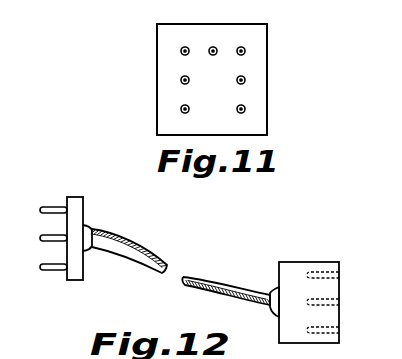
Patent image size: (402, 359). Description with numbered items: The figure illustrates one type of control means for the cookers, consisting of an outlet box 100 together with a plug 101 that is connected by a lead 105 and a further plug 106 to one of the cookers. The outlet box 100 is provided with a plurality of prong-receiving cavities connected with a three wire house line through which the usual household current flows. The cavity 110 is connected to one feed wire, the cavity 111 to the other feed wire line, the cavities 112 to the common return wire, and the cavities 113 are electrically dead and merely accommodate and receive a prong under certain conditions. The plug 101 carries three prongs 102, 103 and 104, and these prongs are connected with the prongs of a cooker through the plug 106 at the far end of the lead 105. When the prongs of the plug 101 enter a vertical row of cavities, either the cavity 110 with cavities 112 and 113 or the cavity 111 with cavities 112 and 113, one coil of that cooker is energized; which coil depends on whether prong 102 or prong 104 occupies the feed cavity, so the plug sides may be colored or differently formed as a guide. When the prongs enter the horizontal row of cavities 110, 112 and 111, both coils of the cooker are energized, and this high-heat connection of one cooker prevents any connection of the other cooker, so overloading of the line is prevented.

In FIG. 11, the outlet box 100 is at (157, 28).
In FIG. 11, the cavity 110 is at (181, 51).
In FIG. 11, the cavity 111 is at (245, 51).
In FIG. 11, the cavities 112 is at (240, 76).
In FIG. 11, the cavities 113 is at (181, 109).
In FIG. 12, the plug 101 is at (78, 268).
In FIG. 12, the prong 102 is at (50, 206).
In FIG. 12, the prong 103 is at (50, 236).
In FIG. 12, the prong 104 is at (50, 274).
In FIG. 12, the lead 105 is at (148, 258).
In FIG. 12, the plug 106 is at (297, 266).